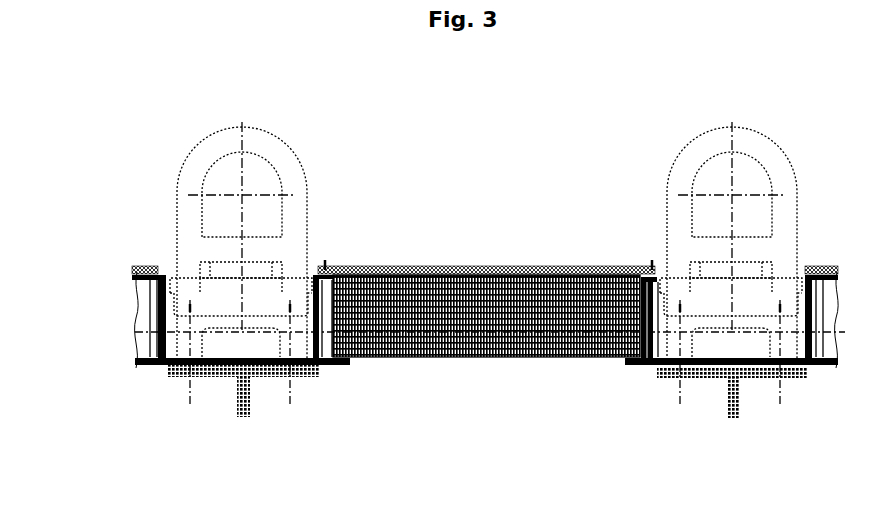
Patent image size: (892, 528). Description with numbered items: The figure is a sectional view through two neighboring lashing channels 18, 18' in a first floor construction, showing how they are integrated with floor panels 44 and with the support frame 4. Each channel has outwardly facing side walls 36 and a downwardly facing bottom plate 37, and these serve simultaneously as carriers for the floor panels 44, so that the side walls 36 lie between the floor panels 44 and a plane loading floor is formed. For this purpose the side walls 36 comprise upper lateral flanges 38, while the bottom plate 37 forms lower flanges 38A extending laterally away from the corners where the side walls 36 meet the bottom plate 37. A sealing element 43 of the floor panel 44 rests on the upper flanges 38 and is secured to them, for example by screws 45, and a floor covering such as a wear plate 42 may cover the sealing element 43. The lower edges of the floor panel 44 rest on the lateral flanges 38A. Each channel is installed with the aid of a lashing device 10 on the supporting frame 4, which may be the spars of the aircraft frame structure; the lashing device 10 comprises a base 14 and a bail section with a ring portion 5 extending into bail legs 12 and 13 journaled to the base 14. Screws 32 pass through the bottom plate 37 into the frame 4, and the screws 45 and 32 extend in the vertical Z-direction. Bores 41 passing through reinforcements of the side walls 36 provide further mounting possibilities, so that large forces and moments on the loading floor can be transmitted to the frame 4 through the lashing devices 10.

The lashing device 10 is at (249, 124).
The ring portion 5 is at (279, 152).
The bail leg 13 is at (186, 243).
The bail leg 12 is at (295, 243).
The screw 45 is at (325, 264).
The sealing element 43 is at (397, 273).
The wear plate 42 is at (492, 272).
The upper lateral flange 38 is at (147, 268).
The floor panel 44 is at (143, 289).
The bore 41 is at (152, 304).
The side wall 36 is at (155, 322).
The lower flange 38A is at (133, 362).
The lashing channel 18 is at (222, 408).
The base 18' is at (741, 416).
The bottom plate 37 is at (215, 365).
The base 14 is at (643, 366).
The screw 32 is at (289, 396).
The support frame 4 is at (249, 399).